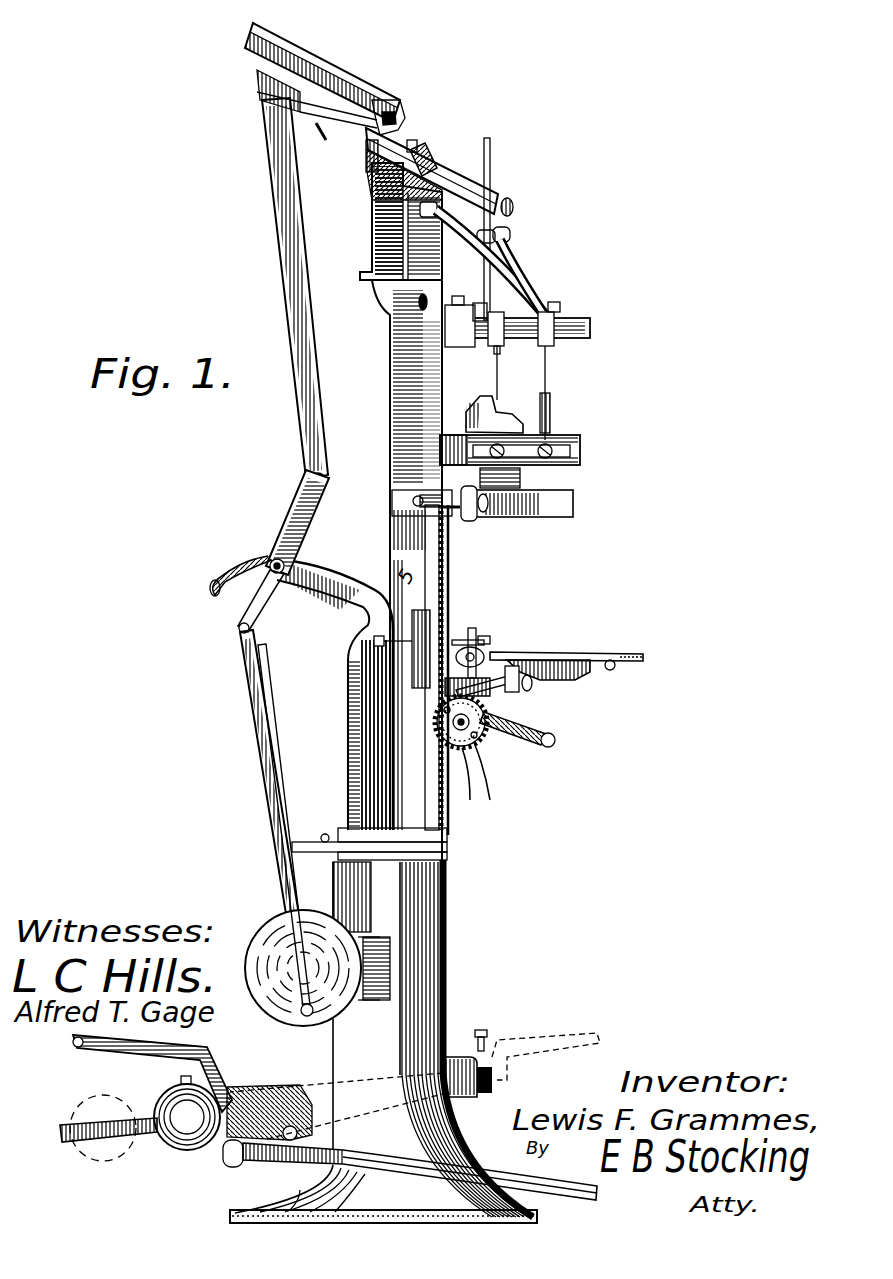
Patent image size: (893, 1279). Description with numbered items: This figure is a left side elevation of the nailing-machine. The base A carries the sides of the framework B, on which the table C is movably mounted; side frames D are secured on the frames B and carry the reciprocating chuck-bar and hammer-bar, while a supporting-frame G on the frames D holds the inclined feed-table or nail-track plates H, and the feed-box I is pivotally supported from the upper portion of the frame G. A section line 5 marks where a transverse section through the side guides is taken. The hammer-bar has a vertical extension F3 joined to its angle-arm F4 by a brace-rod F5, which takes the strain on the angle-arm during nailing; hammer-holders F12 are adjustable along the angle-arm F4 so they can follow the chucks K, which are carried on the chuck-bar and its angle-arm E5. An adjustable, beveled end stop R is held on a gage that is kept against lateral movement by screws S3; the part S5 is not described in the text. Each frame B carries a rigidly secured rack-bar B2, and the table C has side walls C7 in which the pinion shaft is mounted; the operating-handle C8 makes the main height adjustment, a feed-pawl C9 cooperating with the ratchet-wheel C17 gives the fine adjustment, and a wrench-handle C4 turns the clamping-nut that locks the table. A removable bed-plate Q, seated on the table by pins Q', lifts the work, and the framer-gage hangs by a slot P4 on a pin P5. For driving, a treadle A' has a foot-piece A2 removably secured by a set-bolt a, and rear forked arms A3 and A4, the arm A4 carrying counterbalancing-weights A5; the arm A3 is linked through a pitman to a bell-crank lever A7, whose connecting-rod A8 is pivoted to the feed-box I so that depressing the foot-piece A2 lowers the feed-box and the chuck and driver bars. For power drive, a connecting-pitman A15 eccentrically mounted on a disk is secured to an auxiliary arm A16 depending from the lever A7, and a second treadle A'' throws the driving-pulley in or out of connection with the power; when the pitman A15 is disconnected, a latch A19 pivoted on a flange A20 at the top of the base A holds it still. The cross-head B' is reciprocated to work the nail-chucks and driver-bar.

The feed-box I is at (345, 85).
The section line 5 is at (430, 182).
The inclined feed-table or nail-track plates H is at (486, 170).
The supporting-frame G is at (372, 250).
The vertical extension of hammer-bar F3 is at (490, 262).
The brace-rod F5 is at (510, 282).
The angle-arm of hammer-bar F4 is at (538, 321).
The hammer-holder F12 is at (565, 355).
The chuck K is at (535, 418).
The angle-arm of chuck-bar E5 is at (582, 452).
The end stop R is at (532, 503).
The screws S3 is at (392, 498).
The pin S5 is at (442, 508).
The side frames D is at (392, 400).
The rack-bar B2 is at (432, 558).
The pin P5 is at (471, 670).
The framework sides B is at (351, 670).
The cross-head B' is at (374, 649).
The connecting-rod A8 is at (285, 321).
The bell-crank lever A7 is at (283, 546).
The auxiliary arm A16 is at (262, 620).
The connecting-pitman A15 is at (268, 812).
The treadle A'' is at (375, 906).
The latch A19 is at (369, 833).
The flange A20 is at (330, 862).
The base A is at (383, 1041).
The treadle A' is at (410, 1130).
The forked arm A3 is at (152, 1062).
The counterbalancing-weights A5 is at (187, 1113).
The forked arm A4 is at (122, 1150).
The set-bolt a is at (467, 1054).
The foot-piece A2 is at (530, 1036).
The slot P4 is at (478, 652).
The bed-plate Q is at (505, 635).
The pins Q' is at (503, 645).
The table C is at (574, 660).
The side walls of table C7 is at (580, 680).
The feed-pawl C9 is at (494, 690).
The operating-handle C8 is at (530, 738).
The ratchet-wheel C17 is at (462, 752).
The wrench-handle C4 is at (492, 770).